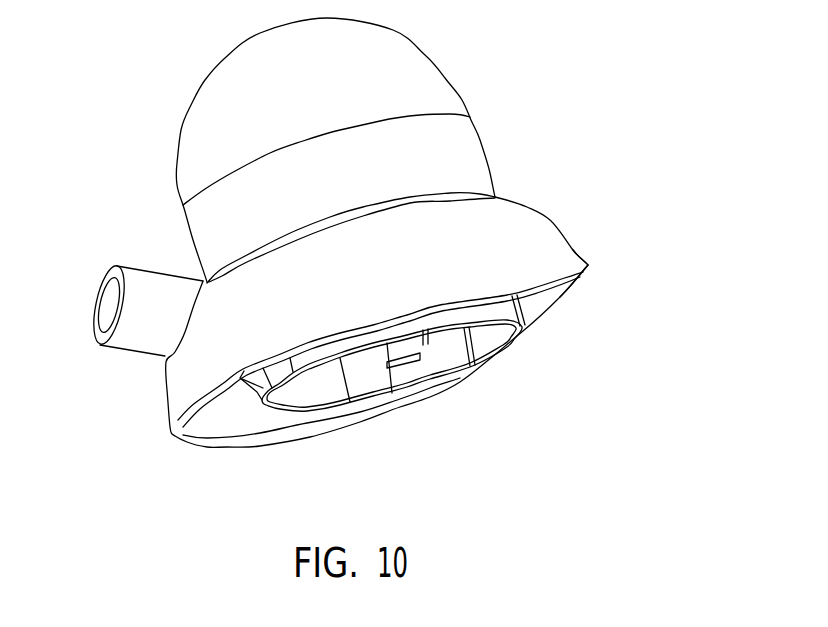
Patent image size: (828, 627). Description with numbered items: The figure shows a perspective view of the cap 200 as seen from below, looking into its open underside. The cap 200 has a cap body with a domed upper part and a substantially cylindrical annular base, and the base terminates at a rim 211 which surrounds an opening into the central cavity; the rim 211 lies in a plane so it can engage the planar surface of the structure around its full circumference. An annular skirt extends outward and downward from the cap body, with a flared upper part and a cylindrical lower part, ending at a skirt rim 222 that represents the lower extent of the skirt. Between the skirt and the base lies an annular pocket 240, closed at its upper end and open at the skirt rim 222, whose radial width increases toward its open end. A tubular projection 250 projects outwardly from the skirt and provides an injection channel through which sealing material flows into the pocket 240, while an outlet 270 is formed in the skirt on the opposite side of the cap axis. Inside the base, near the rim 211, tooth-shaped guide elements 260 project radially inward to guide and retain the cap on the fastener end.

The cap 200 is at (473, 57).
The rim 211 is at (258, 410).
The skirt rim 222 is at (172, 430).
The annular pocket 240 is at (218, 425).
The tubular projection 250 is at (130, 335).
The guide element 260 is at (403, 372).
The outlet 270 is at (582, 282).